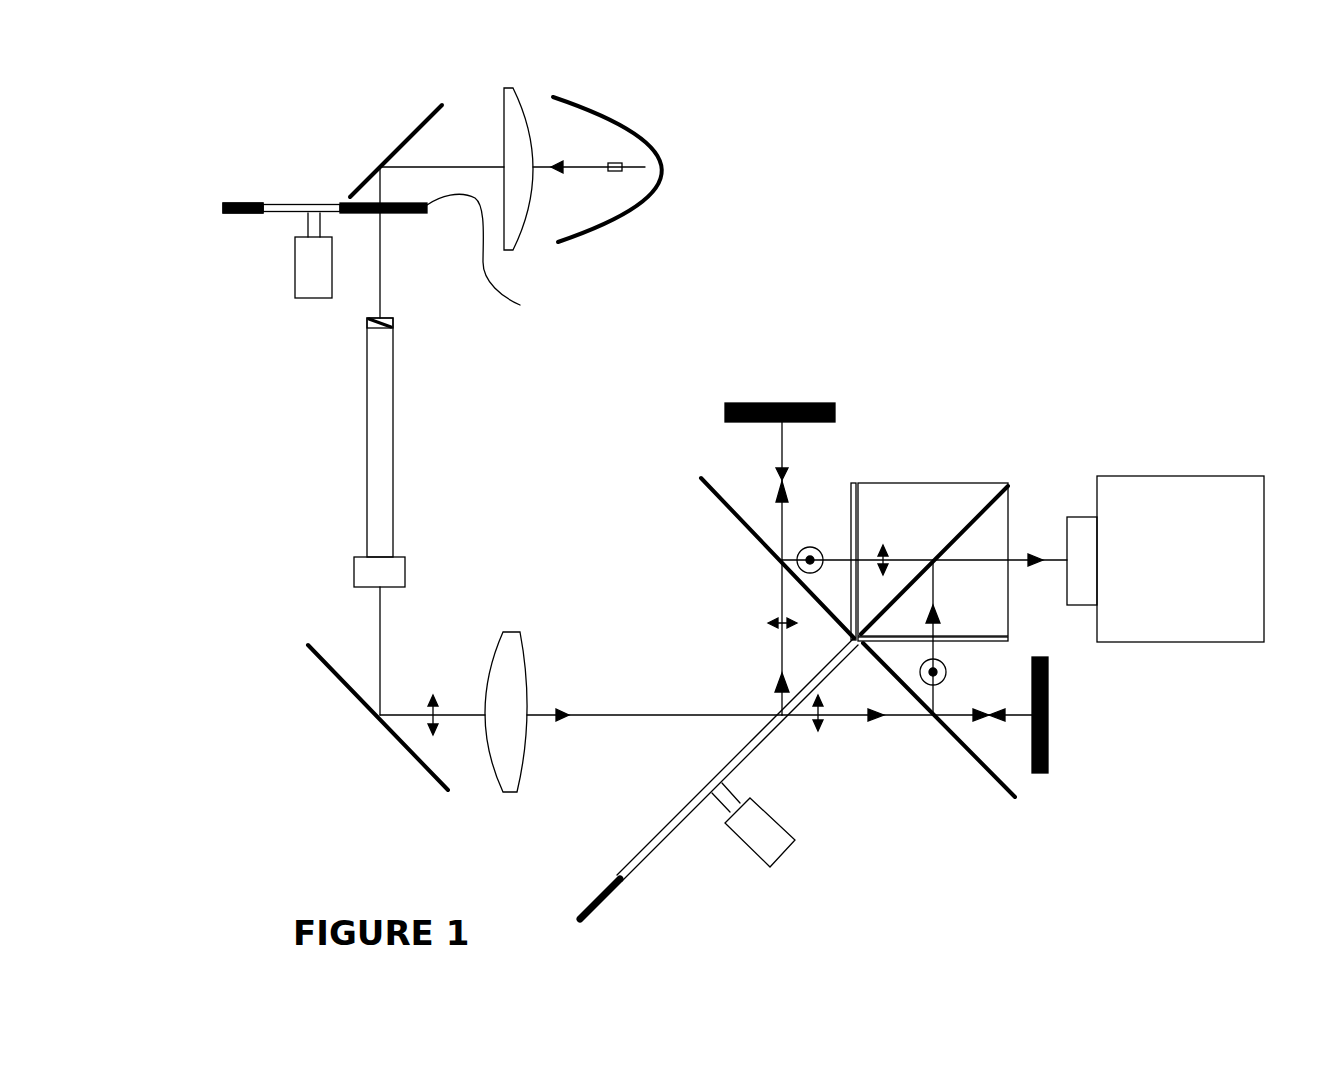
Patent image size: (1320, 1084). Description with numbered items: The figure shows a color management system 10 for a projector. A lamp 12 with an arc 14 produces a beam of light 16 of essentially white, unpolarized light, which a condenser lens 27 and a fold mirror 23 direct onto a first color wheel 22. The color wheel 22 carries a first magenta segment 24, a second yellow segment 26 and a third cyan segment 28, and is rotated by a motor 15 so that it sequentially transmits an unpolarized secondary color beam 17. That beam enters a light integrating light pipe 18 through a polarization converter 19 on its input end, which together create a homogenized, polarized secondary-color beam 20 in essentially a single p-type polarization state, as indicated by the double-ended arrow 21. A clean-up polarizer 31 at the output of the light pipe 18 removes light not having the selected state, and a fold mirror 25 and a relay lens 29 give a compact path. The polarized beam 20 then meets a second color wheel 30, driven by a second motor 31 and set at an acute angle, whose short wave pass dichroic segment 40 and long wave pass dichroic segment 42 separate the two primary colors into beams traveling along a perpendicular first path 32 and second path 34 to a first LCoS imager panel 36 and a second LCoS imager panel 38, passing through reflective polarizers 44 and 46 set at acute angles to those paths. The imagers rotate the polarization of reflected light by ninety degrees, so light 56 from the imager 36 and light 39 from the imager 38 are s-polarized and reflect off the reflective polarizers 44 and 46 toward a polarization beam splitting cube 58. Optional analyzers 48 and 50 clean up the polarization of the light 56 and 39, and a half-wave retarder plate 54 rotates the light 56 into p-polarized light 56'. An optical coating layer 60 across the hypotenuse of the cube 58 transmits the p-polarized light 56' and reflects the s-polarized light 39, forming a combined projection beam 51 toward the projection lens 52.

The color management system 10 is at (928, 160).
The lamp 12 is at (618, 161).
The arc 14 is at (608, 108).
The motor 15 is at (300, 293).
The beam of light 16 is at (577, 168).
The unpolarized secondary color beam 17 is at (380, 250).
The light integrating light pipe 18 is at (393, 403).
The polarization converter 19 is at (393, 322).
The polarized secondary-color beam 20 is at (378, 628).
The double-ended arrow 21 is at (442, 708).
The color wheel 22 is at (250, 194).
The fold mirror 23 is at (405, 138).
The first secondary color segment 24 is at (245, 215).
The fold mirror 25 is at (343, 680).
The second secondary color segment 26 is at (297, 202).
The condenser lens 27 is at (505, 85).
The third secondary color segment 28 is at (493, 258).
The relay lens 29 is at (520, 632).
The second color wheel 30 is at (616, 858).
The clean-up polarizer 31 is at (354, 573).
The first path 32 is at (782, 643).
The second path 34 is at (903, 720).
The first LCoS imager panel 36 is at (833, 403).
The second LCoS imager panel 38 is at (1042, 773).
The light reflecting from the blue/green imager 39 is at (933, 652).
The short wave pass dichroic segment 40 is at (750, 752).
The long wave pass dichroic segment 42 is at (613, 897).
The reflective polarizer 44 is at (737, 522).
The reflective polarizer 46 is at (975, 760).
The analyzer 48 is at (850, 505).
The analyzer 50 is at (960, 642).
The combined projection beam 51 is at (1017, 563).
The projection lens 52 is at (1152, 480).
The half-wave retarder plate 54 is at (853, 483).
The light reflected by the red/blue imager 56 is at (924, 539).
The p-polarized light 56' is at (890, 537).
The polarization beam splitting cube 58 is at (943, 483).
The optical coating layer 60 is at (977, 522).